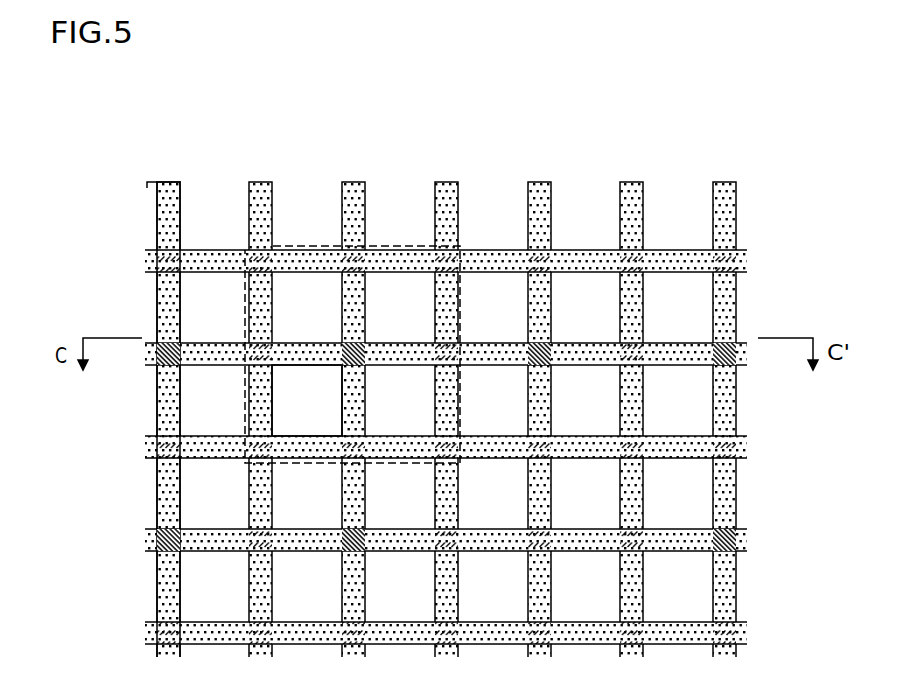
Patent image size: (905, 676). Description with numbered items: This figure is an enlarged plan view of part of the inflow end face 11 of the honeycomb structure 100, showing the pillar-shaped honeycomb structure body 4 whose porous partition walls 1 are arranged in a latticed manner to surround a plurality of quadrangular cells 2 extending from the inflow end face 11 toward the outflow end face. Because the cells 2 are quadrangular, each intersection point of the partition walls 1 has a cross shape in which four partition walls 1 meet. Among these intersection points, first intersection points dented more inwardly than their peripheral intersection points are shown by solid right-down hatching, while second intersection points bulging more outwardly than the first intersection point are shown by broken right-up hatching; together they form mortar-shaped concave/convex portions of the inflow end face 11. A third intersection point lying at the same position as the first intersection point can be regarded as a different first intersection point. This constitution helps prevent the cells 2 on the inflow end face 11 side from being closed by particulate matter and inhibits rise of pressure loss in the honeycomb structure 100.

The honeycomb structure 100 is at (787, 98).
The partition wall 1 is at (542, 345).
The cell 2 is at (295, 405).
The honeycomb structure body 4 is at (642, 168).
The inflow end face 11 is at (162, 145).